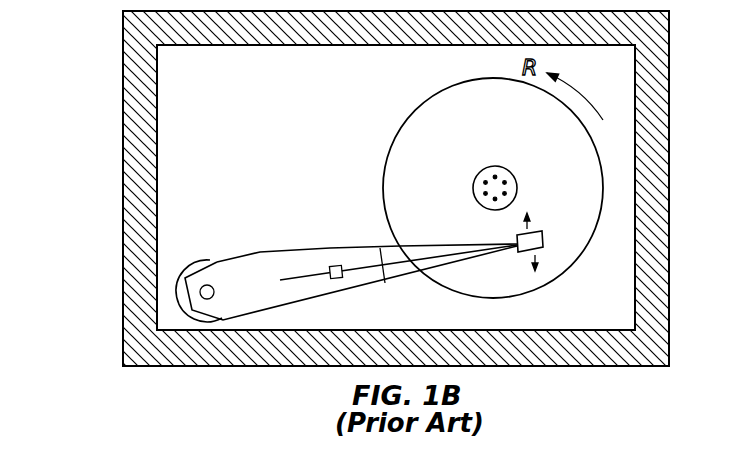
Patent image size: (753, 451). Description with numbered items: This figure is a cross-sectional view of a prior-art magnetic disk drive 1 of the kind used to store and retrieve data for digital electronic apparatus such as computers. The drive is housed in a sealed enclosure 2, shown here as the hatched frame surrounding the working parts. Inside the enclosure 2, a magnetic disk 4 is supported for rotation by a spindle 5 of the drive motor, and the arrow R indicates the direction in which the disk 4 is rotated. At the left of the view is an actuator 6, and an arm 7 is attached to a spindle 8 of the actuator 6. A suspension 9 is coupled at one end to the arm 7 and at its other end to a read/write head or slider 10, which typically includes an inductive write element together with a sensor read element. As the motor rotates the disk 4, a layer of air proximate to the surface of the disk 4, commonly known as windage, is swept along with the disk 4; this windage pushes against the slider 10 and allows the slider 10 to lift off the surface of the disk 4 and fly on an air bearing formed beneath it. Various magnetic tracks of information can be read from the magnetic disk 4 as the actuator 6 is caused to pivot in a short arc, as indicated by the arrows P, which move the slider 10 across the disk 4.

The magnetic disk drive 1 is at (90, 38).
The sealed enclosure 2 is at (289, 347).
The magnetic disk 4 is at (382, 190).
The spindle 5 is at (497, 166).
The actuator 6 is at (204, 260).
The arm 7 is at (287, 275).
The spindle 8 is at (214, 291).
The suspension 9 is at (403, 277).
The read/write head or slider 10 is at (544, 239).